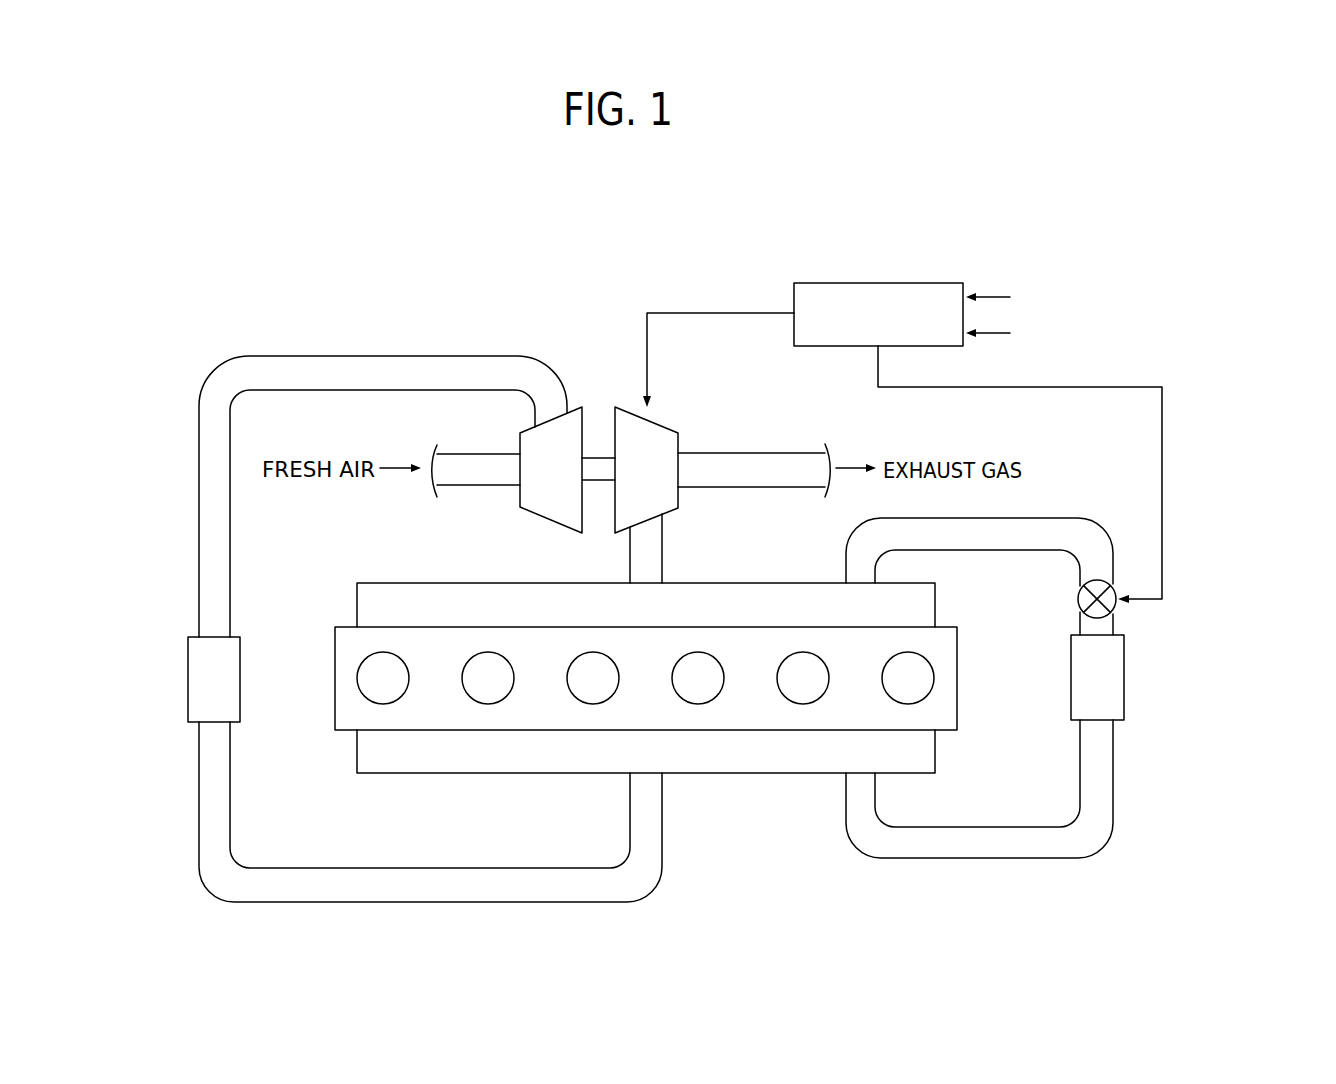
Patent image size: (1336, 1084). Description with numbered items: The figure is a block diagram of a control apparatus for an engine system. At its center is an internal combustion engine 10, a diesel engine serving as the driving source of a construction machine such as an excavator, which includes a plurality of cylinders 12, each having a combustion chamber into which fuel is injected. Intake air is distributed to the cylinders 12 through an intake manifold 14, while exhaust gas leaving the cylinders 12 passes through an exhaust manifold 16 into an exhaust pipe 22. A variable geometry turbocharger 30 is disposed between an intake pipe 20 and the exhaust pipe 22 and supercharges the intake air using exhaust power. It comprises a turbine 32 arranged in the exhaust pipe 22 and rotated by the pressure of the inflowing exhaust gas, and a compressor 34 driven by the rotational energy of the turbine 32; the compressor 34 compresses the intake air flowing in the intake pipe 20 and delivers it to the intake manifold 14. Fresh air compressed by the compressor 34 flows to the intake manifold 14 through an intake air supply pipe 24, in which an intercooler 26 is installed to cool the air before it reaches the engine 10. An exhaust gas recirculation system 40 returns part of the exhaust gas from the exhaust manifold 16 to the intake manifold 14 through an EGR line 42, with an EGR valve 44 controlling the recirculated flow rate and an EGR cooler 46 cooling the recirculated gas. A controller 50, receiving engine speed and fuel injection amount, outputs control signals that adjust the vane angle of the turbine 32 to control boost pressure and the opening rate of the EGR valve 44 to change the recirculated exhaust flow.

The internal combustion engine 10 is at (346, 743).
The cylinders 12 is at (357, 678).
The intake manifold 14 is at (782, 760).
The exhaust manifold 16 is at (795, 600).
The intake pipe 20 is at (650, 835).
The exhaust pipe 22 is at (652, 550).
The intake air supply pipe 24 is at (213, 462).
The intercooler 26 is at (203, 678).
The variable geometry turbocharger 30 is at (631, 446).
The turbine 32 is at (663, 425).
The compressor 34 is at (540, 516).
The exhaust gas recirculation system 40 is at (1066, 656).
The EGR line 42 is at (1067, 530).
The EGR valve 44 is at (1105, 605).
The EGR cooler 46 is at (1112, 680).
The controller 50 is at (878, 297).